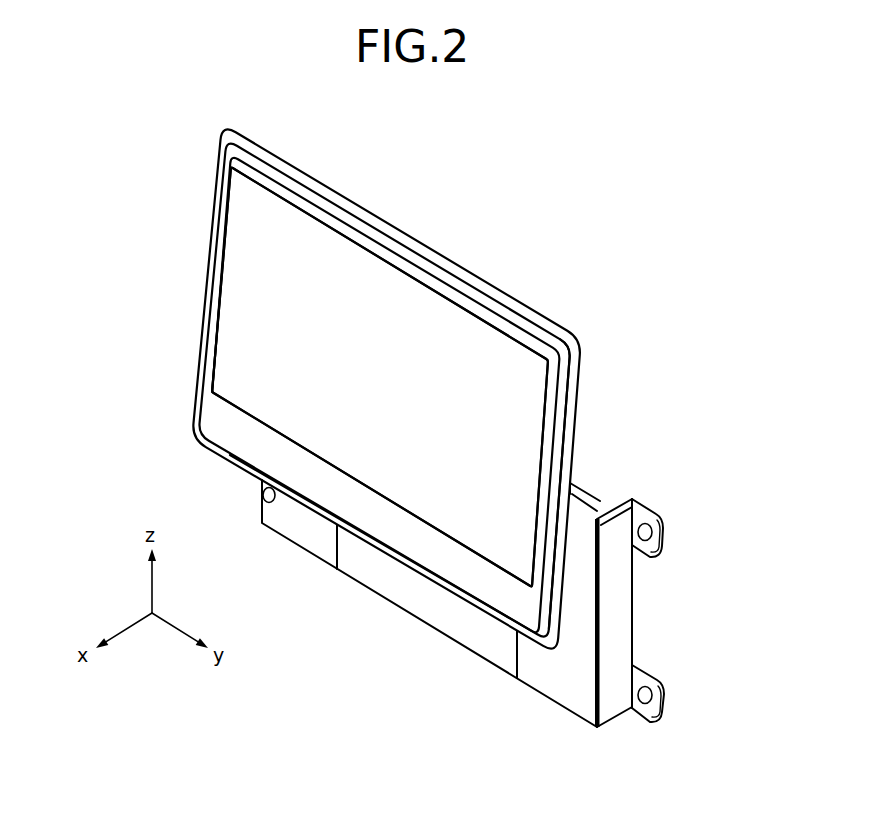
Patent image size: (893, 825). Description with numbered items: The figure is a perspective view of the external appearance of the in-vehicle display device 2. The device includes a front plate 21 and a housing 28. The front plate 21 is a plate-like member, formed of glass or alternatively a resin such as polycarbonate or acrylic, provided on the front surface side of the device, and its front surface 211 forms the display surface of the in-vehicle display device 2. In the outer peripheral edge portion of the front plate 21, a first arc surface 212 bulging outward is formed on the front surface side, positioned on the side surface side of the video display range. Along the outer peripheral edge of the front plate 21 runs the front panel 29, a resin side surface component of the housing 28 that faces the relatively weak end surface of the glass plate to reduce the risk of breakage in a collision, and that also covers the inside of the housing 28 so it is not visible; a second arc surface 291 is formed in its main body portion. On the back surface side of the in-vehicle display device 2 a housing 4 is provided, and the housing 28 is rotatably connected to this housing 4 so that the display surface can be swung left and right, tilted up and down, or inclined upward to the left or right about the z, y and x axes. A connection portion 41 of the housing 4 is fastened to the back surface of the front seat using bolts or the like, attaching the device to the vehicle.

The in-vehicle display device 2 is at (583, 181).
The front plate 21 is at (337, 267).
The front surface 211 is at (387, 298).
The first arc surface 212 is at (447, 295).
The housing 28 is at (555, 335).
The front panel 29 is at (505, 305).
The second arc surface 291 is at (565, 390).
The housing 4 is at (595, 499).
The connection portion 41 is at (667, 540).